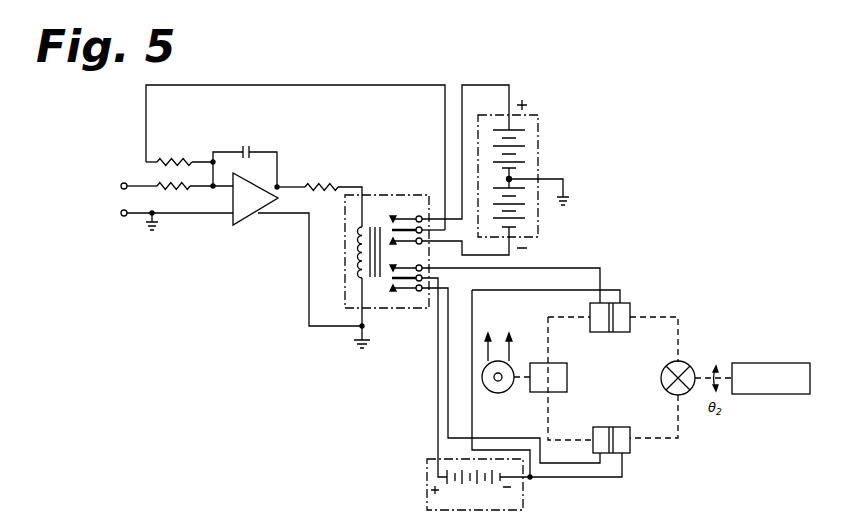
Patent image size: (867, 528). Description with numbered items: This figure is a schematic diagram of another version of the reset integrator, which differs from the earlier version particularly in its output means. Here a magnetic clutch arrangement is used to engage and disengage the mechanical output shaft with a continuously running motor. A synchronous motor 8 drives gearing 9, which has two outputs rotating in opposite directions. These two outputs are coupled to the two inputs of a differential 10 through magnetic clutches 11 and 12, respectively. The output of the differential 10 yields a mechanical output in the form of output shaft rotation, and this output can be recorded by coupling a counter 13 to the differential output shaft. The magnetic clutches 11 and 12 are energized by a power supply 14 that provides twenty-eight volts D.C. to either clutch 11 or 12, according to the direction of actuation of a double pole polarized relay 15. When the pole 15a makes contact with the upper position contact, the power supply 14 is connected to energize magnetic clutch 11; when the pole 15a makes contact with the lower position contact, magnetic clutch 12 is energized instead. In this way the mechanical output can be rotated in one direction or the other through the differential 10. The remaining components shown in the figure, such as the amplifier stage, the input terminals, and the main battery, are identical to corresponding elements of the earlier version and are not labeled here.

The synchronous motor 8 is at (497, 387).
The gearing 9 is at (550, 384).
The differential 10 is at (680, 367).
The magnetic clutch 11 is at (627, 308).
The magnetic clutch 12 is at (627, 447).
The counter 13 is at (772, 388).
The power supply 14 is at (524, 500).
The double pole polarized relay 15 is at (380, 305).
The pole 15a is at (408, 281).